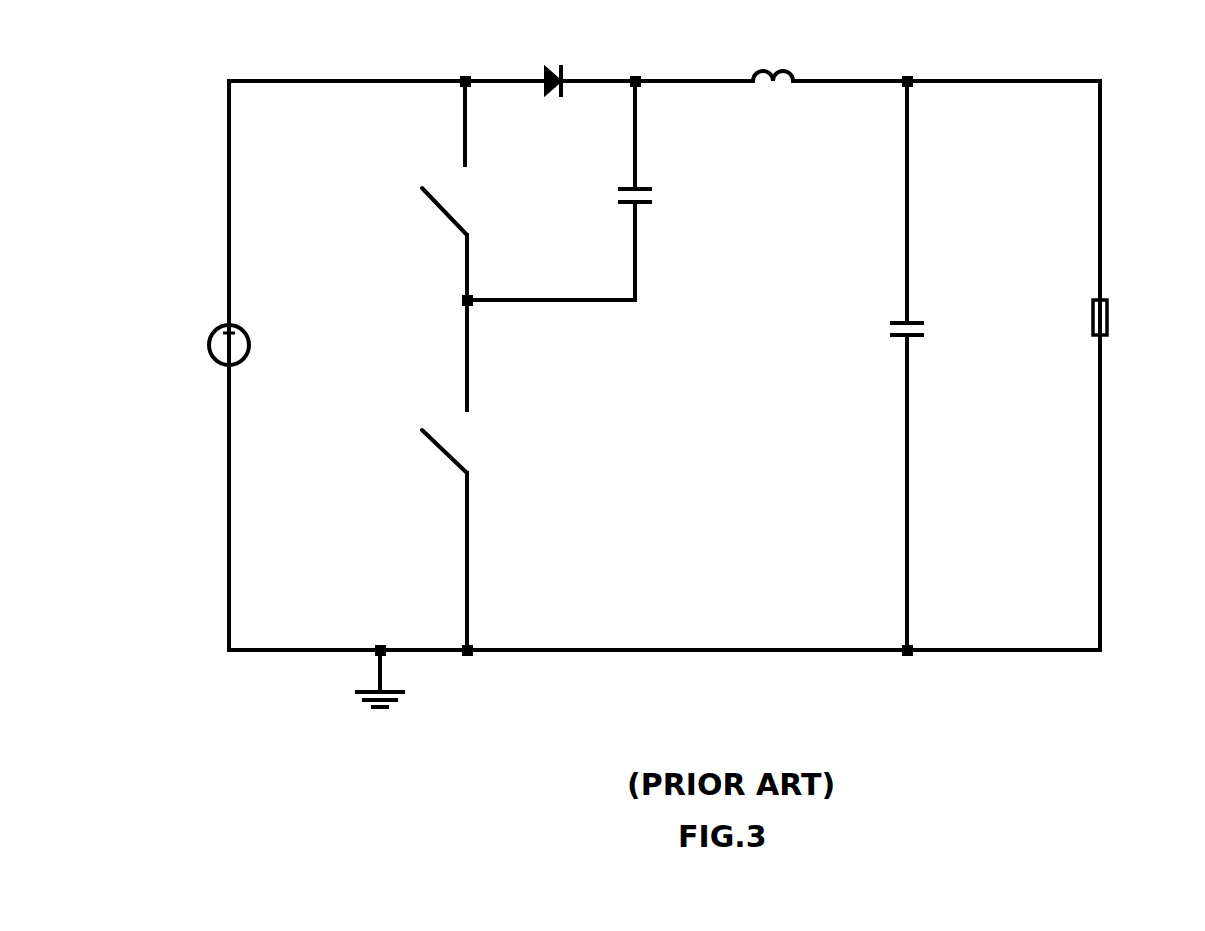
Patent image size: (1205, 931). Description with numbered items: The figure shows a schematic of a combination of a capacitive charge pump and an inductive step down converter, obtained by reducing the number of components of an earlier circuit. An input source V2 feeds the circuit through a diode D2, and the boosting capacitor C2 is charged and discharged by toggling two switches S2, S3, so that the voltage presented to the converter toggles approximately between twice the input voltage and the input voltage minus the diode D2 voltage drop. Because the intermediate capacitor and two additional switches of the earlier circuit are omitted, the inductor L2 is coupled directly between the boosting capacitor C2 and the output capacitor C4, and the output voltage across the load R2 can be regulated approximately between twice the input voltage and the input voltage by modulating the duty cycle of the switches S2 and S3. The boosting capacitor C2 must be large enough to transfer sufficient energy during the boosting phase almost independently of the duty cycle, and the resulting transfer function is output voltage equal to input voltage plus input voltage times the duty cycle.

The voltage source V2 is at (249, 345).
The switch S2 is at (438, 218).
The switch S3 is at (438, 466).
The diode D2 is at (552, 62).
The boosting capacitor C2 is at (649, 205).
The inductor L2 is at (773, 95).
The output capacitor C4 is at (888, 333).
The load resistor R2 is at (1113, 320).